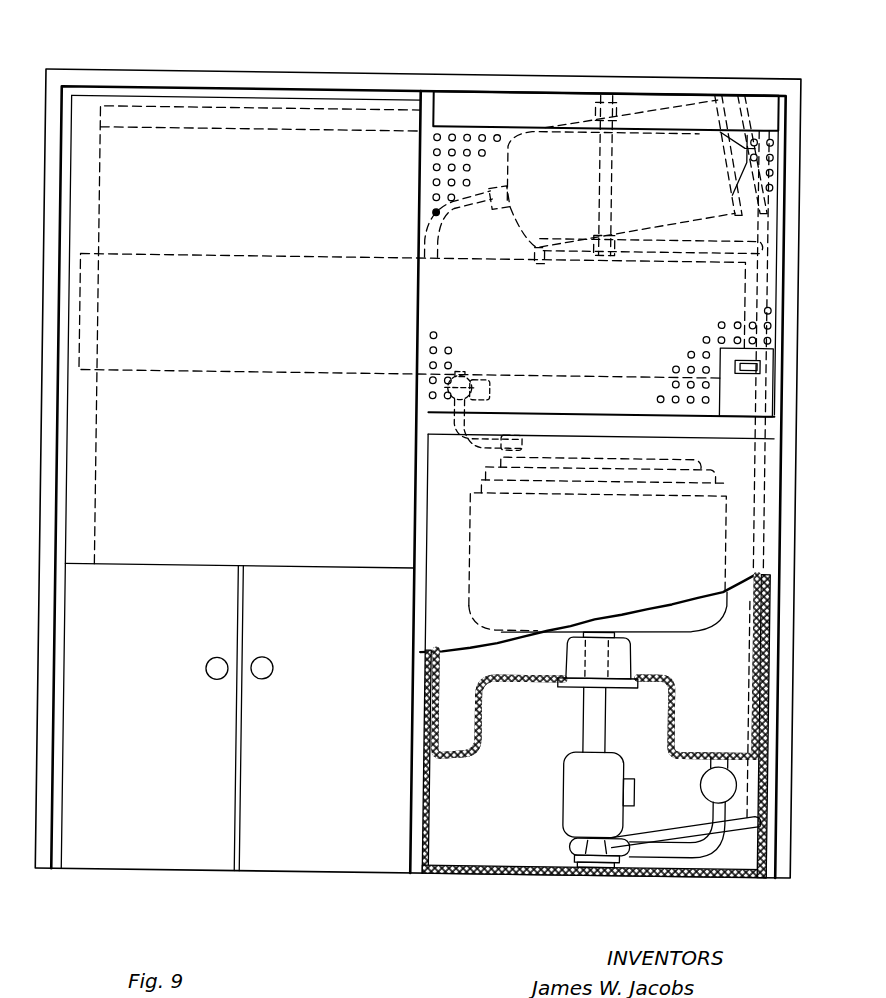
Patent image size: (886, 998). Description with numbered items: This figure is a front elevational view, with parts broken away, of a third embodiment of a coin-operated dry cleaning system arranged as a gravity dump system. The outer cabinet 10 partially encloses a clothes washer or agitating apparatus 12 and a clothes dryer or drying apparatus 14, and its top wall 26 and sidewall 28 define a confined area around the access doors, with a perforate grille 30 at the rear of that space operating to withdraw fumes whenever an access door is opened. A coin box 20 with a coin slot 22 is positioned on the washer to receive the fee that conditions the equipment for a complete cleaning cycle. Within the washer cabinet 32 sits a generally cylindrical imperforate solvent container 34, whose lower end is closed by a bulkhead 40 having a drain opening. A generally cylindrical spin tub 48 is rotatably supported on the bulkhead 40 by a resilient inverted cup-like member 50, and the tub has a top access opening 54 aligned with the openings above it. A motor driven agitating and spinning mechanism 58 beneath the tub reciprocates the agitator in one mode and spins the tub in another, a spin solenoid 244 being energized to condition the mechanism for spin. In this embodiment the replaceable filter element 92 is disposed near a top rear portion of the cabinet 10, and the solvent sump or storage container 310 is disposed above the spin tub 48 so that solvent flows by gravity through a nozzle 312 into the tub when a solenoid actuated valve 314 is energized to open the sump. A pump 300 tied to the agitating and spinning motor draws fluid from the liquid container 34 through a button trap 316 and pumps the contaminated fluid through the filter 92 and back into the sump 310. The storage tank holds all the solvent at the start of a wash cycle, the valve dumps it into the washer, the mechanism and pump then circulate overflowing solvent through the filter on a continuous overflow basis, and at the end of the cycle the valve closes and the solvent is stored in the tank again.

The outer cabinet 10 is at (384, 66).
The clothes washer 12 is at (427, 578).
The clothes dryer 14 is at (203, 103).
The coin box 20 is at (737, 339).
The coin slot 22 is at (745, 359).
The top wall 26 is at (548, 78).
The sidewall 28 is at (796, 115).
The perforate grille 30 is at (476, 125).
The washer cabinet 32 is at (432, 664).
The solvent container 34 is at (762, 630).
The bulkhead 40 is at (683, 714).
The spin tub 48 is at (474, 523).
The resilient inverted cup-like member 50 is at (577, 650).
The top access opening 54 is at (600, 449).
The agitating and spinning mechanism 58 is at (572, 775).
The filter 92 is at (657, 100).
The spin solenoid 244 is at (641, 790).
The pump 300 is at (582, 839).
The solvent sump 310 is at (353, 249).
The nozzle 312 is at (494, 438).
The solenoid actuated valve 314 is at (450, 383).
The button trap 316 is at (724, 773).